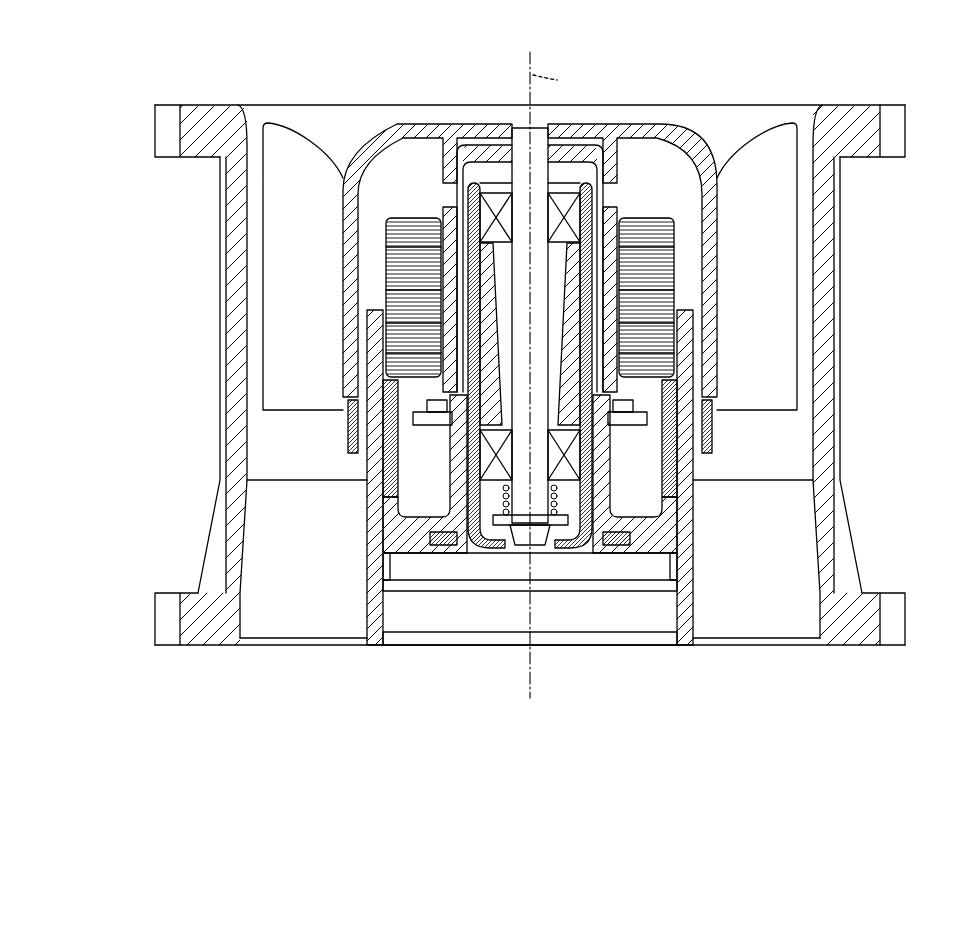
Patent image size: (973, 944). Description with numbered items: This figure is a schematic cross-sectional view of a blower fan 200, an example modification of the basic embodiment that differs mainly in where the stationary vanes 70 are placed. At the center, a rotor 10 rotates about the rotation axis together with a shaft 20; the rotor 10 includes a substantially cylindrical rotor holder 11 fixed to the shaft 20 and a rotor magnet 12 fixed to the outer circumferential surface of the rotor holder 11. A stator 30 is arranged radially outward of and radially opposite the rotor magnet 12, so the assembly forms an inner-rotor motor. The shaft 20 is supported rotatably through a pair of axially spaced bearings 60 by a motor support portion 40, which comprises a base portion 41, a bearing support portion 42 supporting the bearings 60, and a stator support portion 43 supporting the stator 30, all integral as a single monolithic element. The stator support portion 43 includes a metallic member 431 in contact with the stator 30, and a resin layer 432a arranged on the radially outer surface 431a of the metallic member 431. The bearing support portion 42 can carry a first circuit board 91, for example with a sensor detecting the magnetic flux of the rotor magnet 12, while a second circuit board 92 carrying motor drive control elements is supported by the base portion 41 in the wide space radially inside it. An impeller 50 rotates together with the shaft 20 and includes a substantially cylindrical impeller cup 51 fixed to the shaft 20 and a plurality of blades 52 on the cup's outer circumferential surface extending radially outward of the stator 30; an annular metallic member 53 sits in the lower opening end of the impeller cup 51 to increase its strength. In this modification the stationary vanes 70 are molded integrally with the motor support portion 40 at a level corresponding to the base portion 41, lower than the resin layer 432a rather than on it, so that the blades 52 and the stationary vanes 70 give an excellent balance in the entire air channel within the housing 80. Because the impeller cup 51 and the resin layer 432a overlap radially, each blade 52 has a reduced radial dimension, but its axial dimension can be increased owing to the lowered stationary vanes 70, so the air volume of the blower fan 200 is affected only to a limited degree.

The rotor 10 is at (662, 60).
The rotor holder 11 is at (583, 133).
The rotor magnet 12 is at (637, 214).
The shaft 20 is at (513, 127).
The stator 30 is at (650, 219).
The motor support portion 40 is at (462, 694).
The base portion 41 is at (413, 560).
The bearing support portion 42 is at (448, 533).
The stator support portion 43 is at (416, 439).
The metallic member 431 is at (378, 323).
The radially outer surface of the metallic member 431a is at (372, 370).
The resin layer 432a is at (372, 392).
The impeller 50 is at (403, 60).
The impeller cup 51 is at (398, 131).
The blades 52 is at (324, 175).
The annular metallic member 53 is at (350, 460).
The bearings 60 is at (484, 192).
The stationary vanes 70 is at (283, 595).
The housing 80 is at (238, 327).
The first circuit board 91 is at (650, 417).
The second circuit board 92 is at (633, 592).
The blower fan 200 is at (868, 60).